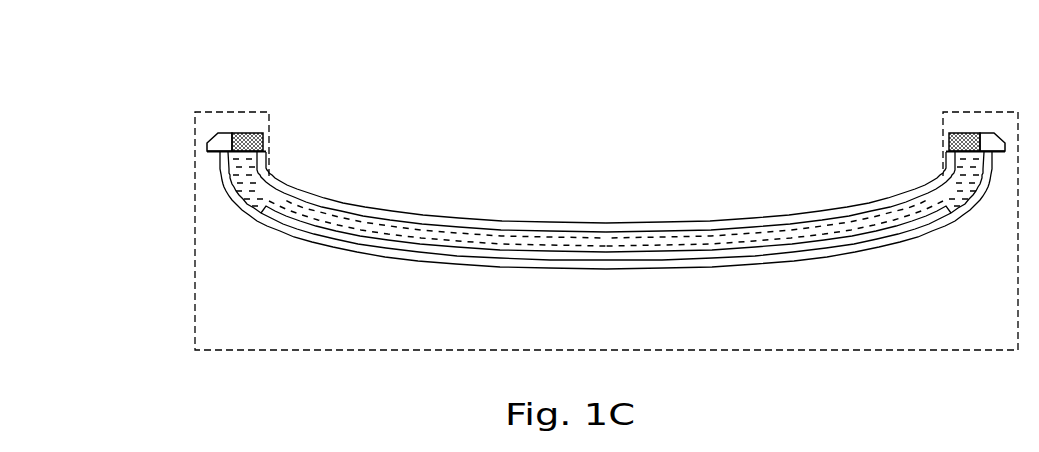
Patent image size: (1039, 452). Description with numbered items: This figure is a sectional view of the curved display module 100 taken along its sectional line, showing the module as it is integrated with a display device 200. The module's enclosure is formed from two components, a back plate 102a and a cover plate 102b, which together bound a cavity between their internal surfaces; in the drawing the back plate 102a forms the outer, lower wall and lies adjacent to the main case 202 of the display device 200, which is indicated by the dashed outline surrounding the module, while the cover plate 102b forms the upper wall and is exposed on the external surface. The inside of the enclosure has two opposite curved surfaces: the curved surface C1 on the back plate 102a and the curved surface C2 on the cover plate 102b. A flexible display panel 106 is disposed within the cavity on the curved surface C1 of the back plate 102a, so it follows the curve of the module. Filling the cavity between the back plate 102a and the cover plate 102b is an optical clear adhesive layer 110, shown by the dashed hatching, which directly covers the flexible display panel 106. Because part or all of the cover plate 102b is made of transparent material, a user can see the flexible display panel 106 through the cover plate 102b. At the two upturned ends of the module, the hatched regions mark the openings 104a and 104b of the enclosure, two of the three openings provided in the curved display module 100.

The curved display module 100 is at (192, 48).
The display device 200 is at (161, 289).
The main case 202 is at (195, 237).
The back plate 102a is at (386, 258).
The cover plate 102b is at (585, 223).
The opening 104a is at (245, 133).
The opening 104b is at (965, 133).
The flexible display panel 106 is at (838, 258).
The optical clear adhesive (OCA) layer 110 is at (440, 237).
The curved surface C1 is at (218, 181).
The curved surface C2 is at (360, 205).